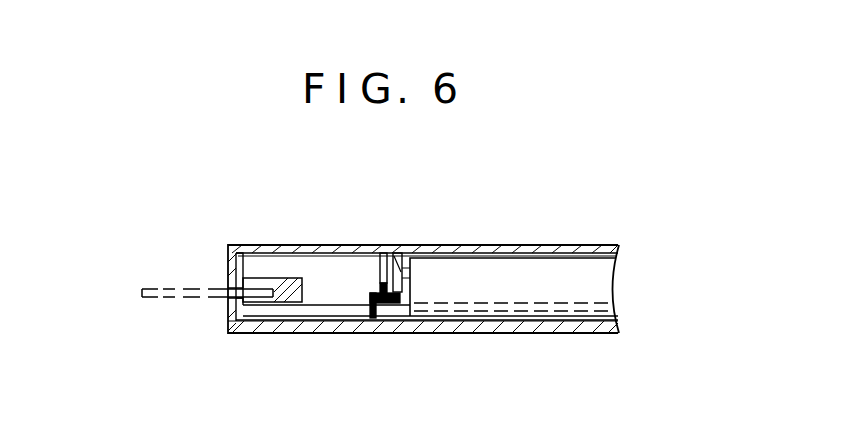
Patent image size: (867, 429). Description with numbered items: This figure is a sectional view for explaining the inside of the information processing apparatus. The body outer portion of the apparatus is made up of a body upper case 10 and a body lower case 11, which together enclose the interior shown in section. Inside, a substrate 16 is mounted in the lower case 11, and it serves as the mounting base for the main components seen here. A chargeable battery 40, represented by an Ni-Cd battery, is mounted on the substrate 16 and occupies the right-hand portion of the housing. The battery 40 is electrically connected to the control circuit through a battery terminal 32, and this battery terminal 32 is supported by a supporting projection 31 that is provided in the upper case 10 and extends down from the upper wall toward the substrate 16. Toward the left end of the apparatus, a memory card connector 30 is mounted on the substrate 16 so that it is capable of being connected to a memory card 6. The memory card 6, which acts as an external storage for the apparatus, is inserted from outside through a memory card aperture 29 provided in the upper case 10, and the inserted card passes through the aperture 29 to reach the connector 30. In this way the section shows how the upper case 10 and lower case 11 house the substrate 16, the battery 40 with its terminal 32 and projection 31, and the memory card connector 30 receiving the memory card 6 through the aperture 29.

The memory card 6 is at (153, 286).
The body upper case 10 is at (578, 243).
The body lower case 11 is at (245, 335).
The substrate 16 is at (320, 262).
The memory card aperture 29 is at (230, 283).
The memory card connector 30 is at (277, 279).
The supporting projection 31 is at (382, 268).
The battery terminal 32 is at (404, 257).
The chargeable battery 40 is at (520, 282).